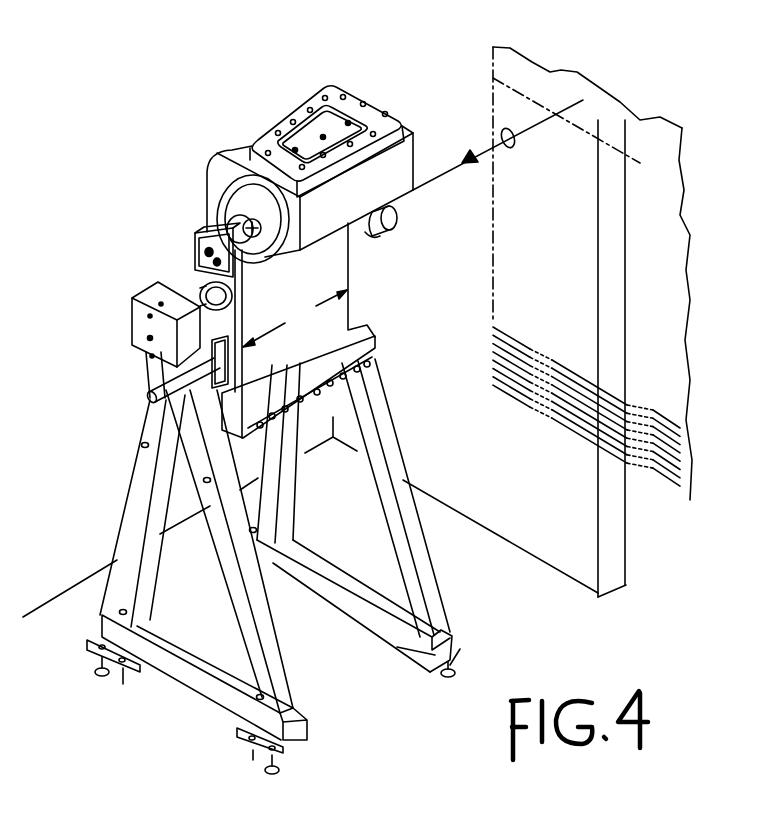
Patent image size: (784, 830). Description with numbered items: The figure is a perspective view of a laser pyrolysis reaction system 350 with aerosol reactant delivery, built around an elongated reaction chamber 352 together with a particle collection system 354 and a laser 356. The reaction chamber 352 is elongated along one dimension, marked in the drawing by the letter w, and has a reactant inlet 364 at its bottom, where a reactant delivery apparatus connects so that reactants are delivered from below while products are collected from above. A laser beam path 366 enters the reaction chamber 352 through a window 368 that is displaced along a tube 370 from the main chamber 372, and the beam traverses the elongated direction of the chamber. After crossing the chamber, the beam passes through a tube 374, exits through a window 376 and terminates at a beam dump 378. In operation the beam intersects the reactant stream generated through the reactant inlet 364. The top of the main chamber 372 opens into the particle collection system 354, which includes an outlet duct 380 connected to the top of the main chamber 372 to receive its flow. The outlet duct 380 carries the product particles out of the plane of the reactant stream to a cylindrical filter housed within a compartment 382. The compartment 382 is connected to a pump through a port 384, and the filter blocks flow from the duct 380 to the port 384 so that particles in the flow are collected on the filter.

The laser pyrolysis reaction system 350 is at (476, 306).
The reaction chamber 352 is at (203, 283).
The particle collection system 354 is at (297, 92).
The laser 356 is at (661, 466).
The reactant inlet 364 is at (277, 418).
The laser beam path 366 is at (440, 175).
The window 368 is at (395, 210).
The tube 370 is at (370, 232).
The main chamber 372 is at (332, 320).
The tube 374 is at (203, 290).
The window 376 is at (152, 360).
The beam dump 378 is at (137, 327).
The outlet duct 380 is at (243, 137).
The compartment 382 is at (222, 163).
The port 384 is at (193, 237).